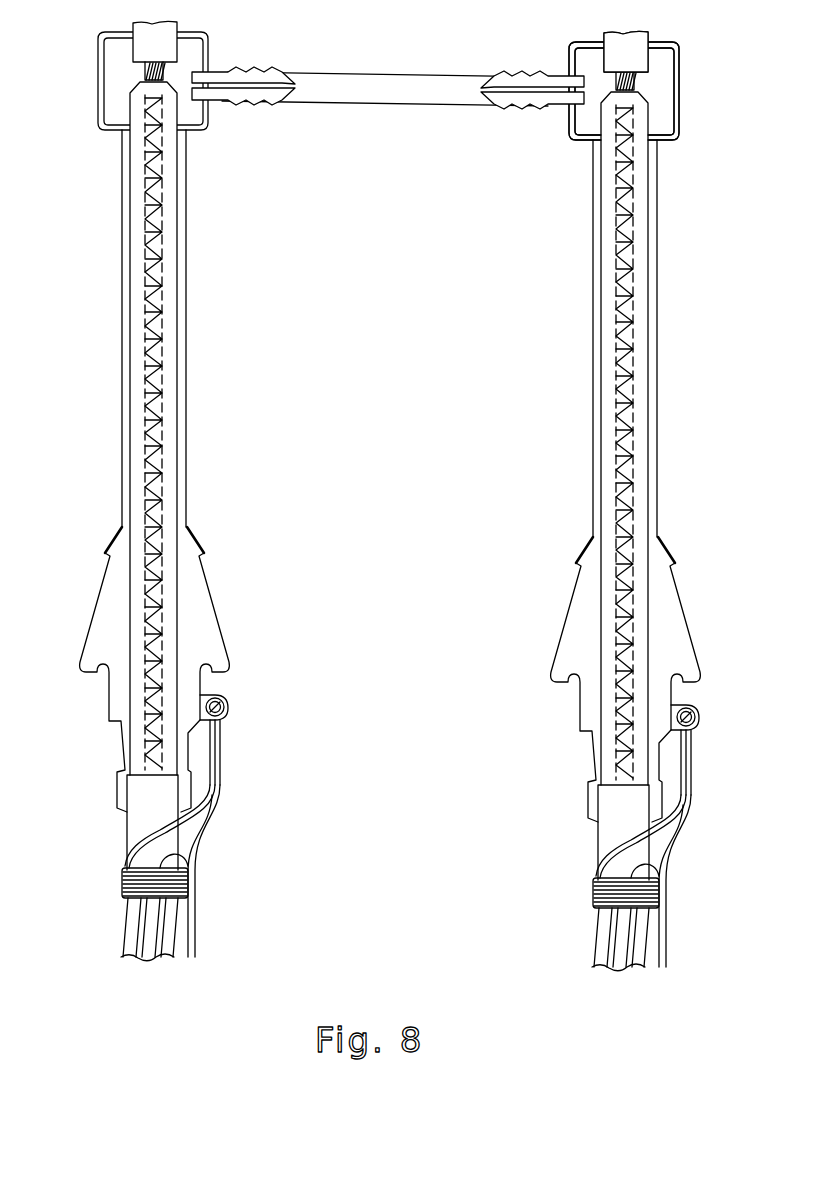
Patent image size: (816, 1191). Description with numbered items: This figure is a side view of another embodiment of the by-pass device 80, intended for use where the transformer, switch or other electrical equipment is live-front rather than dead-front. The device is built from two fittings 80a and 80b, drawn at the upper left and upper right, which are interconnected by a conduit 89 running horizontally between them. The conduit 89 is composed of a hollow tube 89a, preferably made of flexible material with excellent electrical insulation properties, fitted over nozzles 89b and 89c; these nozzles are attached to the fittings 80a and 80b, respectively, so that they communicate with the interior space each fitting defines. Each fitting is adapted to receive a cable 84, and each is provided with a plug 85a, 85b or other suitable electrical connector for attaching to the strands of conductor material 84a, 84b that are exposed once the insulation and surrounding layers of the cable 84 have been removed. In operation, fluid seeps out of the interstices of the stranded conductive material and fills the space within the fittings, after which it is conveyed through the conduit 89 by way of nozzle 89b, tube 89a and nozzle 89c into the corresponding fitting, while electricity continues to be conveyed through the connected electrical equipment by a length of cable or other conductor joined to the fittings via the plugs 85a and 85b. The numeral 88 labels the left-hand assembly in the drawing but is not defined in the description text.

The by-pass device 80 is at (655, 425).
The fitting 80a is at (193, 55).
The fitting 80b is at (660, 88).
The cable 84 is at (125, 913).
The strands of conductor material 84a is at (167, 74).
The strands of conductor material 84b is at (617, 88).
The plug 85a is at (168, 40).
The plug 85b is at (613, 47).
The electrode assembly 88 is at (173, 481).
The conduit 89 is at (375, 331).
The hollow tube 89a is at (370, 107).
The nozzle 89b is at (218, 96).
The nozzle 89c is at (560, 107).